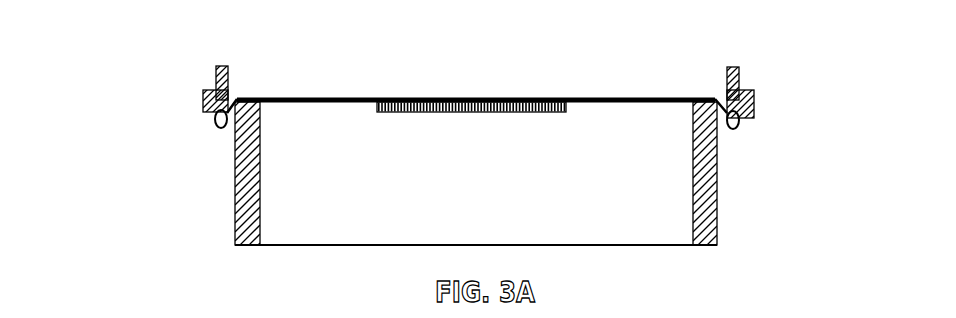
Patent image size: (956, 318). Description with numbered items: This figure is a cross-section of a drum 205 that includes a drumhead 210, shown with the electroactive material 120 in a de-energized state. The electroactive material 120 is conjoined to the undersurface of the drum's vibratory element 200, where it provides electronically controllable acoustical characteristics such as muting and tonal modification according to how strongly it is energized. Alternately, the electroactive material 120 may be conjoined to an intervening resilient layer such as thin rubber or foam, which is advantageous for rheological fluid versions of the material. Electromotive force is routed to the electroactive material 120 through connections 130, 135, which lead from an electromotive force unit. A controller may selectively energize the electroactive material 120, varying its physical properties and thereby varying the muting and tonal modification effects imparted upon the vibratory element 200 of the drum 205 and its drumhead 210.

The electroactive material 120 is at (567, 112).
The connection 130 is at (218, 170).
The connection 135 is at (372, 104).
The vibratory element 200 is at (450, 99).
The drum 205 is at (713, 186).
The drumhead 210 is at (218, 88).